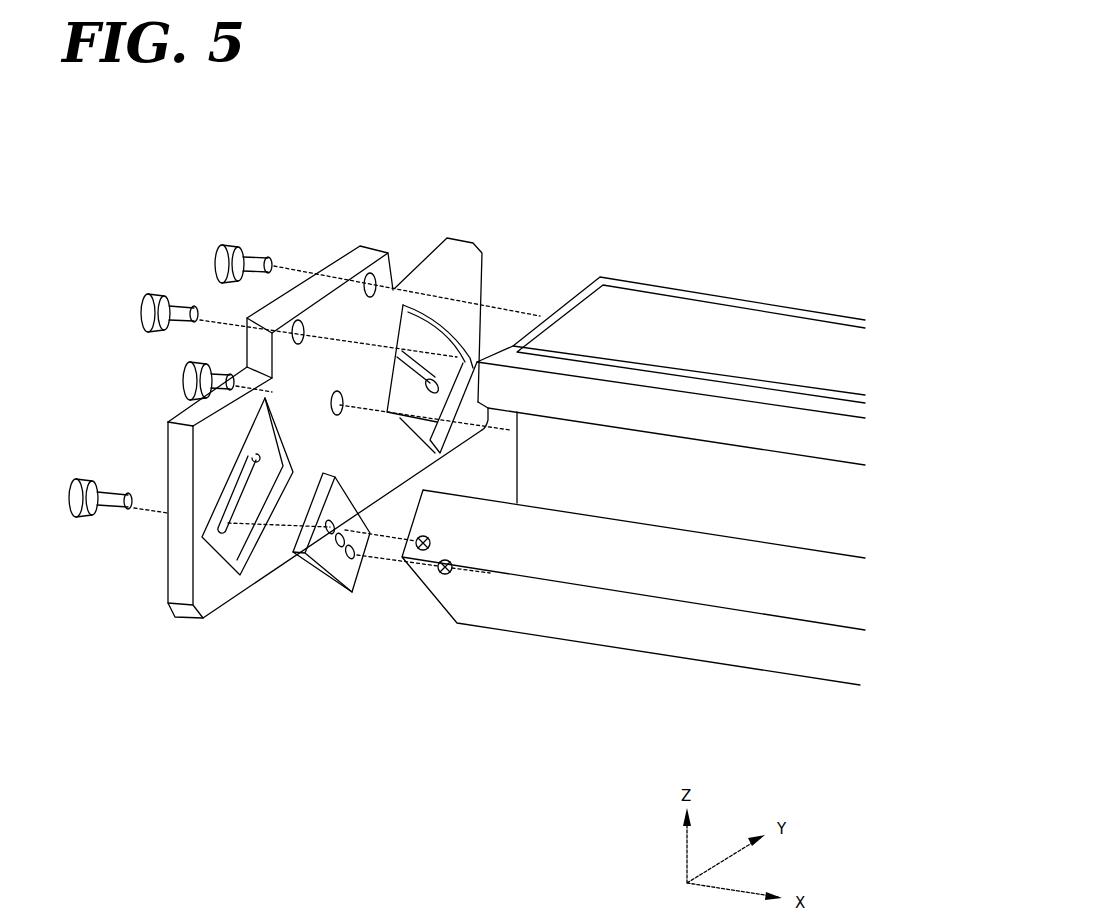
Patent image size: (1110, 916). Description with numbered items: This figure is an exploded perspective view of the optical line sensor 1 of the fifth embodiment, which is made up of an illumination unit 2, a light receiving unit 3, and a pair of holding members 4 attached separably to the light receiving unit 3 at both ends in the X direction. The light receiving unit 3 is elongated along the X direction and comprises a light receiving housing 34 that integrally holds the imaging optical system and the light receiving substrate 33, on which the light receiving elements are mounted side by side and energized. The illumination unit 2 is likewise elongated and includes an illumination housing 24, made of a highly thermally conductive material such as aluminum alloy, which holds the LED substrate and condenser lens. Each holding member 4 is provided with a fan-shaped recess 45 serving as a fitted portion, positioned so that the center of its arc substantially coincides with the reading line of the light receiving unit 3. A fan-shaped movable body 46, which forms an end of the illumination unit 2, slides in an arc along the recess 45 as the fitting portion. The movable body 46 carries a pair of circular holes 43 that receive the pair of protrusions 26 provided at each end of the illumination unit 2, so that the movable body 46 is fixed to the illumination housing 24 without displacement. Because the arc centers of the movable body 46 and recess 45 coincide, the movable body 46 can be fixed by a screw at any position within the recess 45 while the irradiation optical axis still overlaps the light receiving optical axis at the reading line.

The optical line sensor 1 is at (575, 126).
The illumination unit 2 is at (681, 658).
The light receiving unit 3 is at (786, 302).
The holding member 4 is at (182, 620).
The illumination housing 24 is at (578, 630).
The protrusions 26 is at (422, 582).
The light receiving substrate 33 is at (722, 307).
The light receiving housing 34 is at (658, 296).
The holes 43 is at (315, 580).
The fan-shaped recess 45 is at (480, 278).
The fan-shaped movable body 46 is at (330, 580).